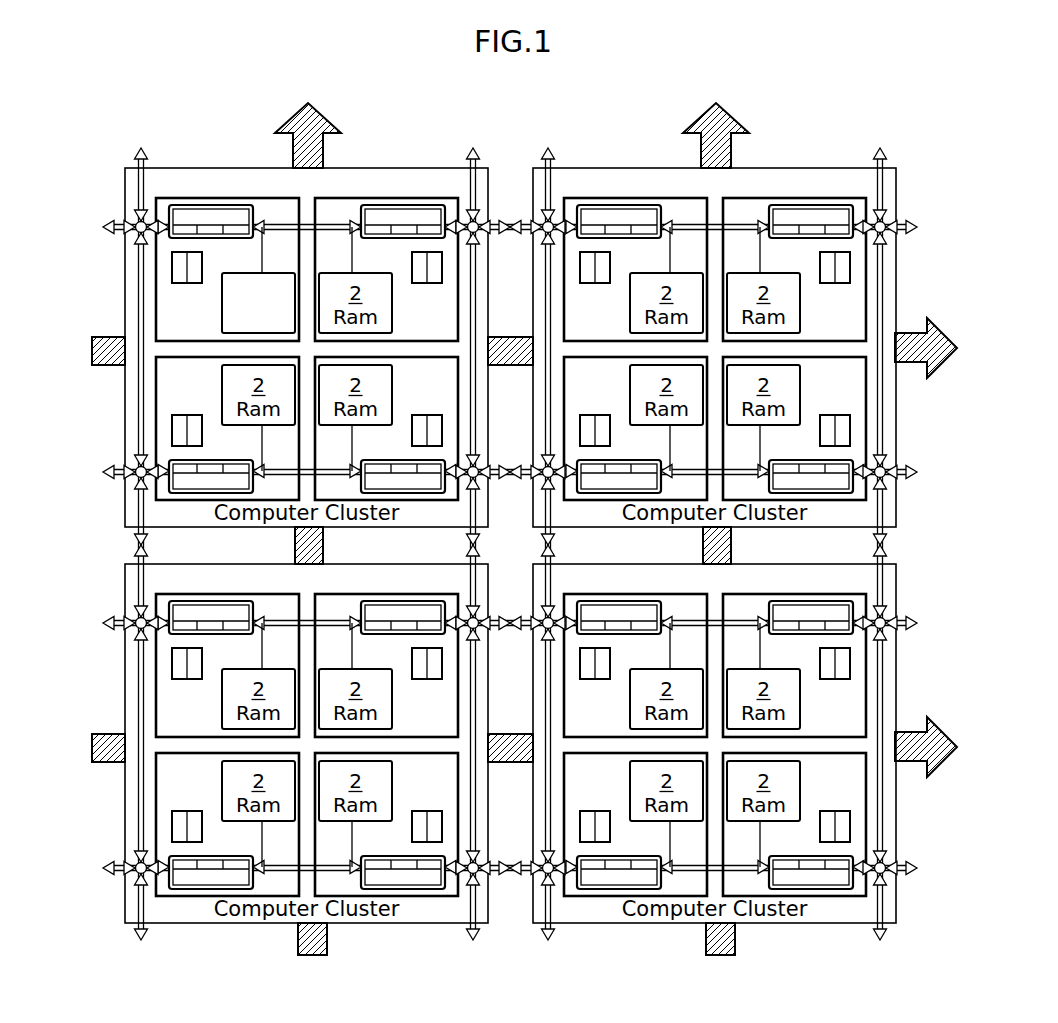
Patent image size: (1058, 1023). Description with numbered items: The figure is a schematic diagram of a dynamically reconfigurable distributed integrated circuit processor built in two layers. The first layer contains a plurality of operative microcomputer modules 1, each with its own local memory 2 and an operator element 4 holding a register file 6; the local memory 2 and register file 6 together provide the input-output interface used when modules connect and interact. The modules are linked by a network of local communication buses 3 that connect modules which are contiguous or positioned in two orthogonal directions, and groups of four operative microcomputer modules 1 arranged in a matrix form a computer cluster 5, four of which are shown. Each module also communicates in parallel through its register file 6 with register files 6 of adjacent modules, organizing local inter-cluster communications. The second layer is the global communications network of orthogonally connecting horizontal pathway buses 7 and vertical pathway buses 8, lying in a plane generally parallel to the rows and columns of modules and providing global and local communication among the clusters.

The operative microcomputer module 1 is at (197, 204).
The local memory 2 is at (266, 304).
The local communication bus 3 is at (535, 199).
The operator element 4 is at (215, 204).
The computer cluster 5 is at (130, 567).
The register file 6 is at (168, 202).
The horizontal pathway bus 7 is at (106, 337).
The vertical pathway bus 8 is at (294, 118).